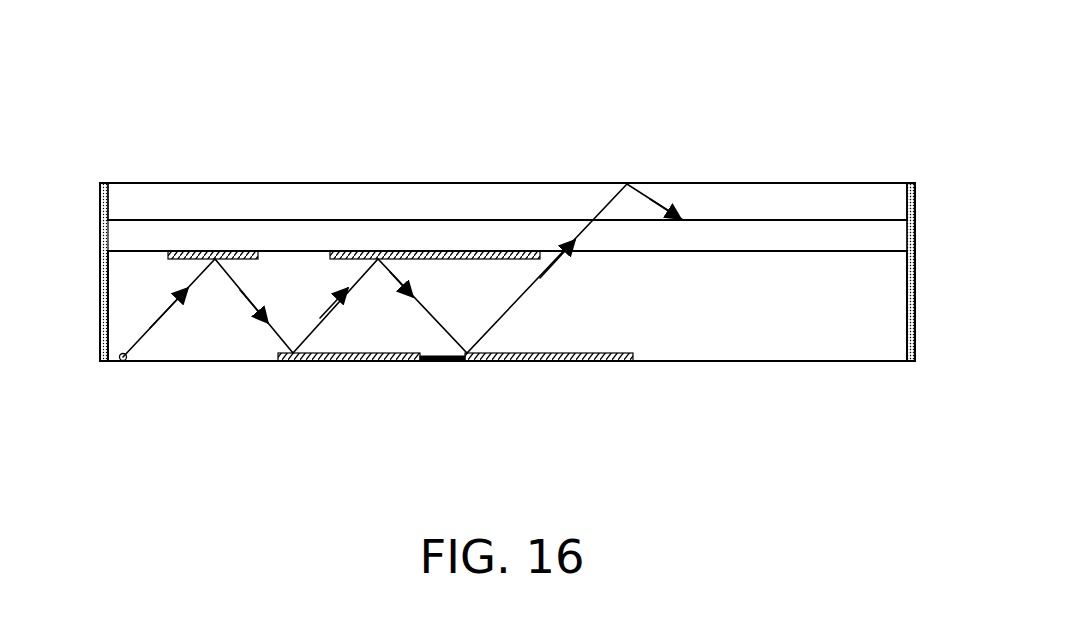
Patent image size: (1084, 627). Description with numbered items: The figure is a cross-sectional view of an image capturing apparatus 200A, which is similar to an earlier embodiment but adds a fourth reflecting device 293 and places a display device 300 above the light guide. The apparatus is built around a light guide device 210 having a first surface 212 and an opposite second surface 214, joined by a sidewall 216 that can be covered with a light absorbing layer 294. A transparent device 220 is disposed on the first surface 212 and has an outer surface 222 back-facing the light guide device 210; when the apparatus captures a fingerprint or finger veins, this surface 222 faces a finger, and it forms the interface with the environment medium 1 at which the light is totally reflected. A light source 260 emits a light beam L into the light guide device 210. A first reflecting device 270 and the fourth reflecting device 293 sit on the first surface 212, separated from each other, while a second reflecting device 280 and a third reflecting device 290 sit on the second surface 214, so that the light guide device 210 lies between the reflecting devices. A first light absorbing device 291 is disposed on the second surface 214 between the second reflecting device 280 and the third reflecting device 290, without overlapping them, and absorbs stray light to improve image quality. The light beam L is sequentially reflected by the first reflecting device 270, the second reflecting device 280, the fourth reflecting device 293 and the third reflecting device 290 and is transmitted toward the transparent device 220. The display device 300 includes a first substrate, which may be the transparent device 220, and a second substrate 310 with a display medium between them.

The environment medium 1 is at (791, 64).
The image capturing apparatus 200A is at (870, 487).
The light guide device 210 is at (127, 296).
The first surface 212 is at (136, 248).
The second surface 214 is at (240, 366).
The sidewall 216 is at (104, 330).
The transparent device 220 is at (895, 233).
The surface 222 is at (805, 215).
The light source 260 is at (122, 364).
The first reflecting device 270 is at (220, 251).
The second reflecting device 280 is at (347, 362).
The third reflecting device 290 is at (541, 362).
The first light absorbing device 291 is at (441, 362).
The fourth reflecting device 293 is at (435, 251).
The light absorbing layer 294 is at (105, 362).
The display device 300 is at (533, 125).
The second substrate 310 is at (880, 200).
The light beam L is at (147, 332).